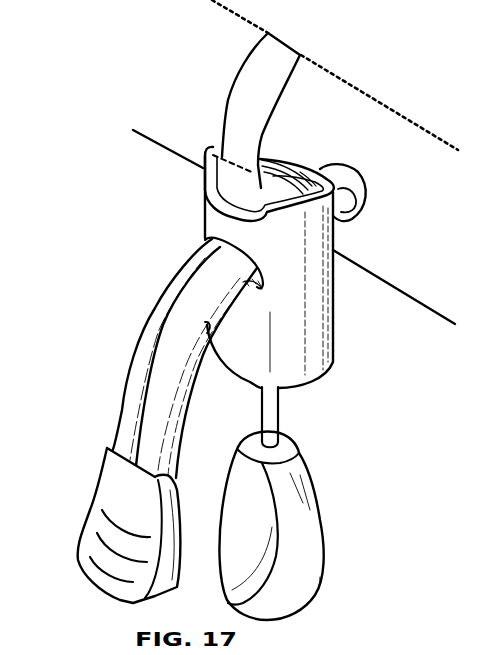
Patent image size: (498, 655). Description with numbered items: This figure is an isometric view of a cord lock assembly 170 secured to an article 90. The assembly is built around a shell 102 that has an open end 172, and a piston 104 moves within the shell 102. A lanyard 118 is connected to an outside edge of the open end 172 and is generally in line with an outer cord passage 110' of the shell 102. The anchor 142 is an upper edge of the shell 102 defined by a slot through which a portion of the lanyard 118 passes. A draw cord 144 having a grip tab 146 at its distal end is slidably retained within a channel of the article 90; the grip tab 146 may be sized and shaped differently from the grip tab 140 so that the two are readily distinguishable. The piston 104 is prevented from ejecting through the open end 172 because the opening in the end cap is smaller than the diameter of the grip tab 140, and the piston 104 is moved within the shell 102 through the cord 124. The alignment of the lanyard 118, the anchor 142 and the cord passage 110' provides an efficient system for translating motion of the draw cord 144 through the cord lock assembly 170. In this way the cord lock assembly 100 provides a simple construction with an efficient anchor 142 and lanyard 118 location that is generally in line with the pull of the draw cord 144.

The article 90 is at (407, 142).
The cord lock assembly 170 is at (120, 168).
The shell 102 is at (325, 303).
The piston 104 is at (297, 166).
The anchor 142 is at (288, 183).
The open end 172 is at (269, 150).
The lanyard 118 is at (242, 97).
The draw cord 144 is at (340, 197).
The outer cord passage 110' is at (236, 287).
The cord 124 is at (270, 408).
The grip tab 140 is at (312, 555).
The grip tab 146 is at (90, 540).
The cord lock assembly 100 is at (379, 651).